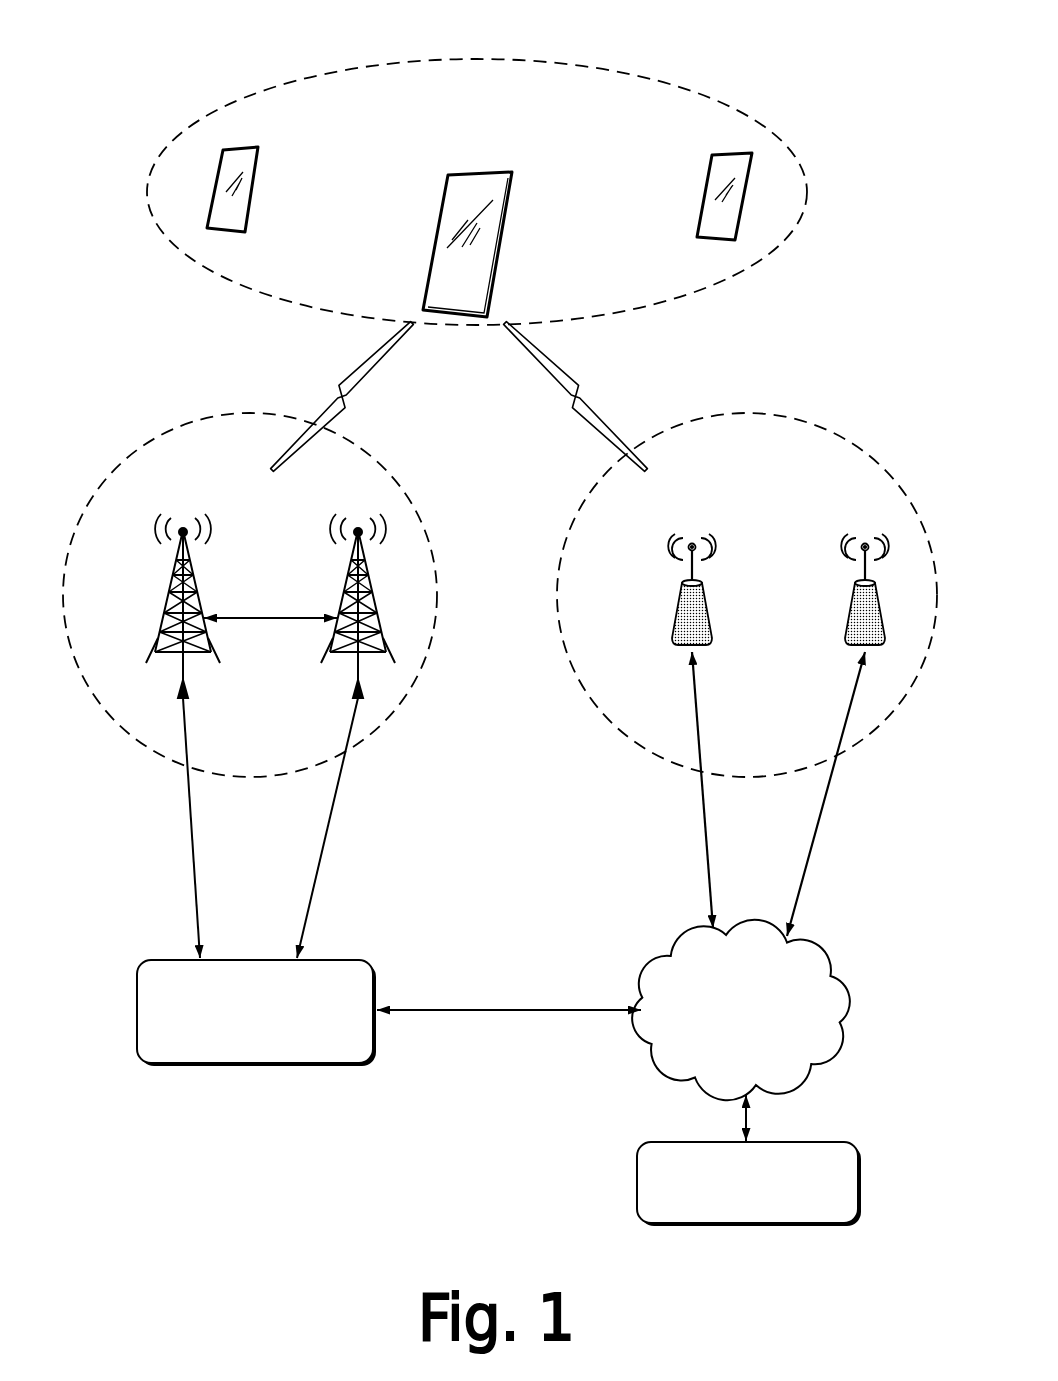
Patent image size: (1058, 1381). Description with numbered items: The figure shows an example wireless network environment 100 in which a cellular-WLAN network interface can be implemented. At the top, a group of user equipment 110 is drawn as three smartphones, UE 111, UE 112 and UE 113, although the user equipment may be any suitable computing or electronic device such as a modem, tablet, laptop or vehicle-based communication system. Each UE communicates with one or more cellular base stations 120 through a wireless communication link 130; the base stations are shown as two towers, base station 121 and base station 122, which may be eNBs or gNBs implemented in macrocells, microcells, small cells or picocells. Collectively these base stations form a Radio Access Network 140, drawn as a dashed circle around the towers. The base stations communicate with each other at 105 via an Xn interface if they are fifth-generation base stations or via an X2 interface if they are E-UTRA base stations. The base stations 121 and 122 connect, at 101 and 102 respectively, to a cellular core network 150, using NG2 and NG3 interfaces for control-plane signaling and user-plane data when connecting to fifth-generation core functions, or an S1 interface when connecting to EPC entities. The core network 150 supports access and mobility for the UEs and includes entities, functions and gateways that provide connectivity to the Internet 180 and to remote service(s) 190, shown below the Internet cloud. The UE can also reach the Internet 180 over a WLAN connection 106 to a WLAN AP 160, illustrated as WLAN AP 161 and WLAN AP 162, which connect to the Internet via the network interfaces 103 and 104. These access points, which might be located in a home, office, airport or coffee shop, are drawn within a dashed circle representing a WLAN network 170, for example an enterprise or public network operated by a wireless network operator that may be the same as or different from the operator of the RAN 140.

The environment 100 is at (195, 42).
The user equipment 110 is at (725, 107).
The UE 111 is at (518, 170).
The UE 112 is at (263, 148).
The UE 113 is at (712, 155).
The wireless communication link 130 is at (325, 398).
The WLAN connection 106 is at (580, 388).
The Radio Access Network 140 is at (403, 470).
The cellular base stations 120 is at (243, 497).
The base station 121 is at (172, 587).
The base station 122 is at (347, 587).
The inter-base-station communication 105 is at (295, 622).
The WLAN network 170 is at (823, 427).
The WLAN AP 160 is at (767, 490).
The WLAN AP 161 is at (675, 580).
The WLAN AP 162 is at (853, 580).
The connection 101 is at (195, 827).
The connection 102 is at (328, 827).
The network interface 103 is at (705, 825).
The network interface 104 is at (817, 825).
The cellular core network 150 is at (256, 1013).
The Internet 180 is at (741, 1010).
The remote service(s) 190 is at (749, 1184).